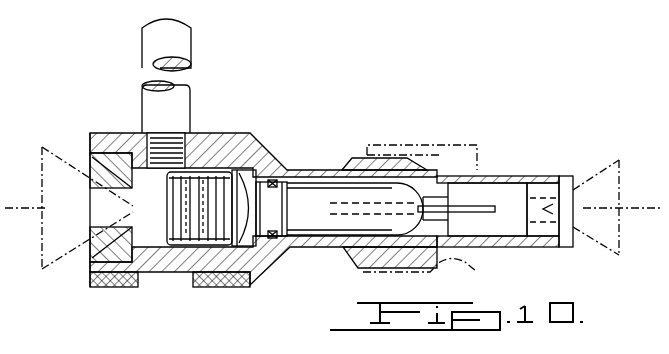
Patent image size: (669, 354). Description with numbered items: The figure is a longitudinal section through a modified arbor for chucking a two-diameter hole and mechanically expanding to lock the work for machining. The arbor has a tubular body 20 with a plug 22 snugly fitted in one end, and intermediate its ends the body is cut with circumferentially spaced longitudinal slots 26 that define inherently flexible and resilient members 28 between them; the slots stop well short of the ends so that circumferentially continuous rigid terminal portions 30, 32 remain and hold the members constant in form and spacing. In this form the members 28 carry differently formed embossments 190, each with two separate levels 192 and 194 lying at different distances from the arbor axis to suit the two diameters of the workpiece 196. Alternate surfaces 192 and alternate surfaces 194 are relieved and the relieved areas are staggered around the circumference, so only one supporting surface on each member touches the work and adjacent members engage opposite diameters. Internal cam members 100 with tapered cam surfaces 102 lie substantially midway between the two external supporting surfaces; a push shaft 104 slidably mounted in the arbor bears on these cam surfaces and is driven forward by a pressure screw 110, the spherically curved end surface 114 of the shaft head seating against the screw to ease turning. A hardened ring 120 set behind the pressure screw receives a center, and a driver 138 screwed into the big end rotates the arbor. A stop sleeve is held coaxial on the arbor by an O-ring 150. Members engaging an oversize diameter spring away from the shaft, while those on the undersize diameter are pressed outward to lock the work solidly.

The tubular body 20 is at (533, 254).
The plug 22 is at (571, 192).
The longitudinal slots 26 is at (485, 212).
The flexible members 28 is at (484, 192).
The rigid terminal portion 30 is at (534, 178).
The rigid terminal portion 32 is at (287, 185).
The internal cam members 100 is at (440, 230).
The cam surfaces 102 is at (374, 202).
The push shaft 104 is at (310, 197).
The pressure screw 110 is at (203, 178).
The spherically curved end surface 114 is at (270, 170).
The hardened ring 120 is at (103, 155).
The driver 138 is at (178, 42).
The O-ring 150 is at (279, 238).
The embossments 190 is at (390, 158).
The work-supporting surface 192 is at (462, 172).
The work-supporting surface 194 is at (380, 168).
The workpiece 196 is at (448, 170).